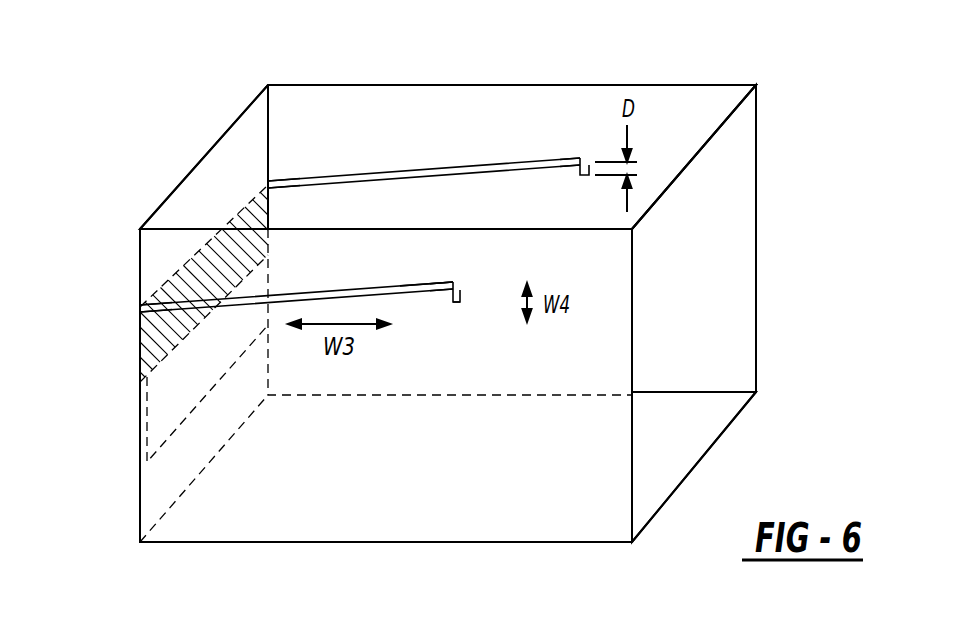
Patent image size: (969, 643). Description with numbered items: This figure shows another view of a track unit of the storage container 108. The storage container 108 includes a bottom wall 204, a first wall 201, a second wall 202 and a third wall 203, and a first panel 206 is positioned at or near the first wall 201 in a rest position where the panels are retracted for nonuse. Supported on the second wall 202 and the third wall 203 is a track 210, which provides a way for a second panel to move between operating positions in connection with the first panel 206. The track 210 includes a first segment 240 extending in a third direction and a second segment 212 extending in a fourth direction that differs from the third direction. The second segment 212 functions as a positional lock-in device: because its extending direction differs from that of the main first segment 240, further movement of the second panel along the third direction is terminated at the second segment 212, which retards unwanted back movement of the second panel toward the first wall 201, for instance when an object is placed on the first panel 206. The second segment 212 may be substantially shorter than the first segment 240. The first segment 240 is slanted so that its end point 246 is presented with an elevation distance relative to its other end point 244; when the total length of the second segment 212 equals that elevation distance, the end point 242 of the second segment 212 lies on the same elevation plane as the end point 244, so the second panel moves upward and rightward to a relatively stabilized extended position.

The storage container 108 is at (192, 570).
The first wall 201 is at (230, 162).
The second wall 202 is at (155, 258).
The third wall 203 is at (682, 122).
The bottom wall 204 is at (653, 453).
The first panel 206 is at (158, 410).
The track 210 is at (430, 307).
The second segment 212 is at (591, 166).
The first segment 240 is at (433, 163).
The end point of the second segment 242 is at (458, 305).
The end point of the first segment 244 is at (272, 183).
The end point of the first segment 246 is at (587, 153).